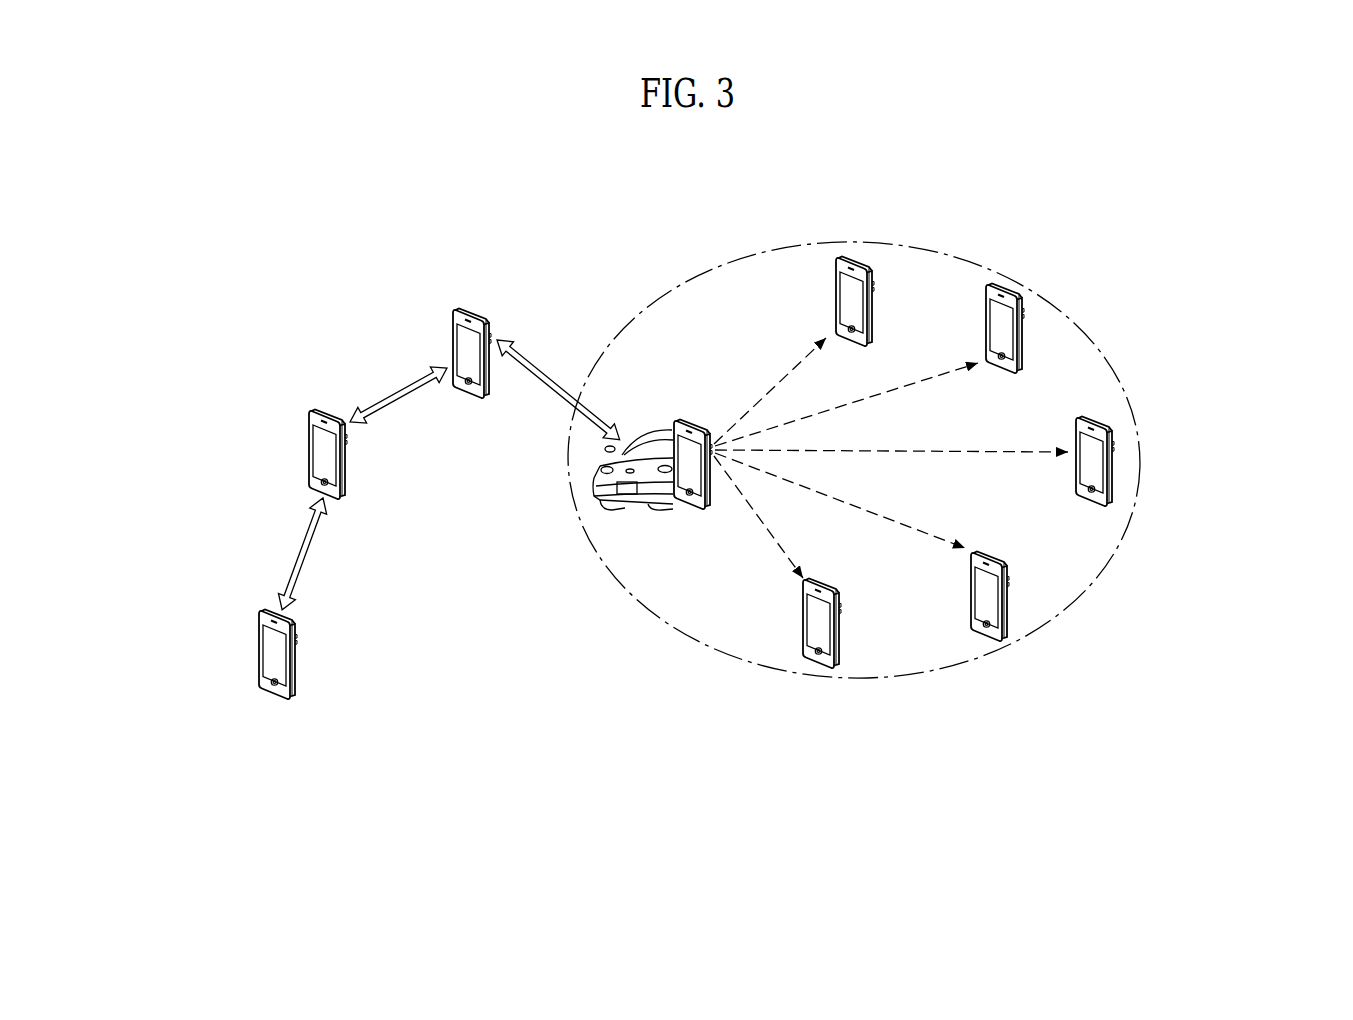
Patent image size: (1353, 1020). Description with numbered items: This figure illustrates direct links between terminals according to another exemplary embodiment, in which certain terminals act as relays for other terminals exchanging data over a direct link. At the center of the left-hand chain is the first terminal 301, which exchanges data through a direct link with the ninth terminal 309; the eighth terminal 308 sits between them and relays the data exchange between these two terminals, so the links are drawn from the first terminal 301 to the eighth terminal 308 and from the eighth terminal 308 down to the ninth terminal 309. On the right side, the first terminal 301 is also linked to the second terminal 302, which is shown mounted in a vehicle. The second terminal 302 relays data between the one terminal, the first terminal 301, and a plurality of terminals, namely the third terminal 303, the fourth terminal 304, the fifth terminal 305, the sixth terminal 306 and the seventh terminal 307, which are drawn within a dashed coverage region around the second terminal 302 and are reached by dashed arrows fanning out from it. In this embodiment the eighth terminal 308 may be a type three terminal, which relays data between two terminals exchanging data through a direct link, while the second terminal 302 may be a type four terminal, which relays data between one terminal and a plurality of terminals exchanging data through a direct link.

The terminal 1 301 is at (463, 308).
The terminal 2 302 is at (700, 508).
The terminal 3 303 is at (845, 257).
The terminal 4 304 is at (998, 283).
The terminal 5 305 is at (1108, 424).
The terminal 6 306 is at (1003, 647).
The terminal 7 307 is at (828, 667).
The terminal 8 308 is at (311, 413).
The terminal 9 309 is at (283, 697).